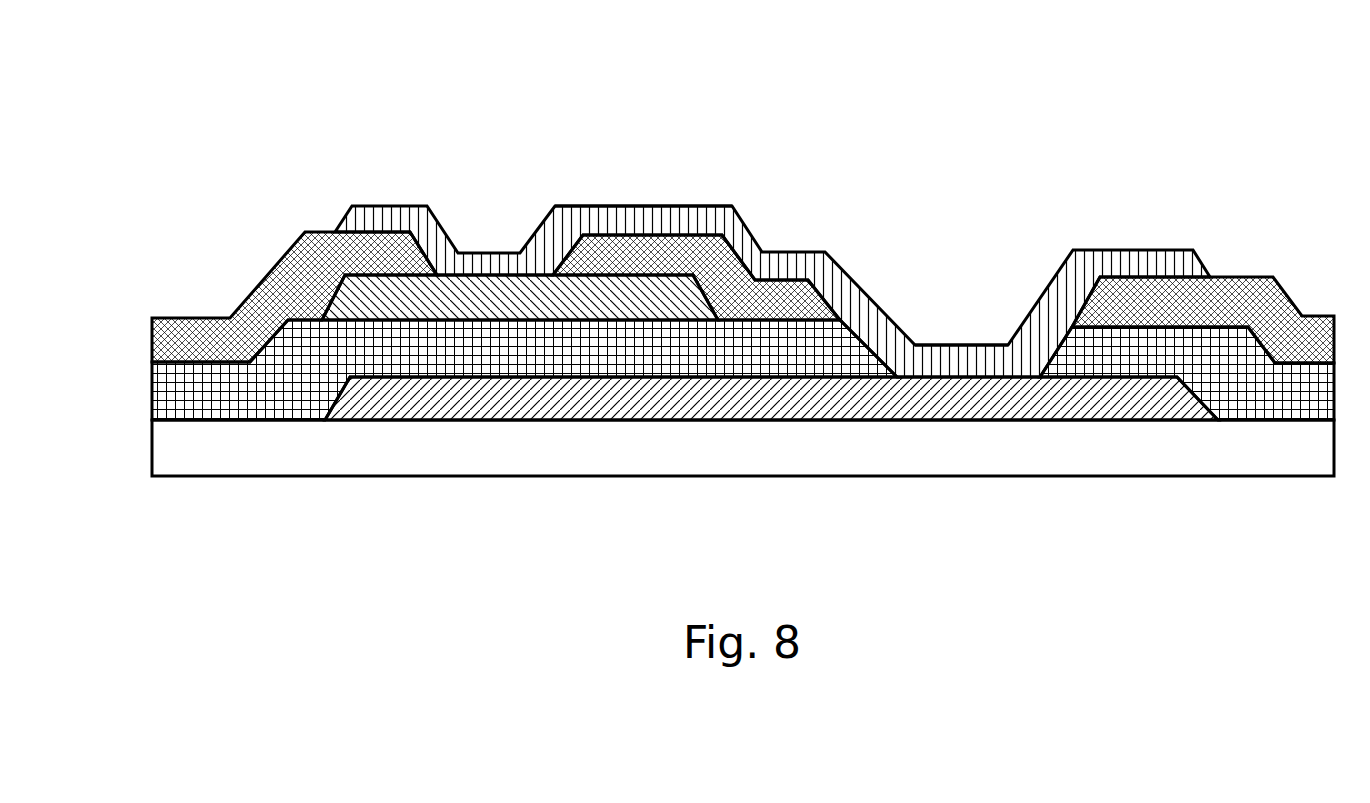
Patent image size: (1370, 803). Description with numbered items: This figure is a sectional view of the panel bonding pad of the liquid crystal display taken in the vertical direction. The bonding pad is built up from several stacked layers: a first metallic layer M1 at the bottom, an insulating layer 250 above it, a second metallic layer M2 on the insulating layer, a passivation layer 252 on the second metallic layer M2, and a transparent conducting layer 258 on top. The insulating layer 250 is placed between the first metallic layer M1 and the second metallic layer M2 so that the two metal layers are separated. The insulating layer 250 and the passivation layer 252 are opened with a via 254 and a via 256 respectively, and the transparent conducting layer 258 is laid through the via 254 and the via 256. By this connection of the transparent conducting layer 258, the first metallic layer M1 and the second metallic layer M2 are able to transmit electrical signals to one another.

The insulating layer 250 is at (250, 398).
The passivation layer 252 is at (1143, 297).
The via 254 is at (976, 334).
The via 256 is at (496, 236).
The transparent conducting layer 258 is at (718, 222).
The first metallic layer M1 is at (647, 398).
The second metallic layer M2 is at (622, 295).